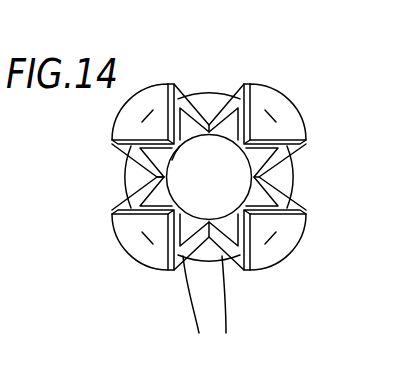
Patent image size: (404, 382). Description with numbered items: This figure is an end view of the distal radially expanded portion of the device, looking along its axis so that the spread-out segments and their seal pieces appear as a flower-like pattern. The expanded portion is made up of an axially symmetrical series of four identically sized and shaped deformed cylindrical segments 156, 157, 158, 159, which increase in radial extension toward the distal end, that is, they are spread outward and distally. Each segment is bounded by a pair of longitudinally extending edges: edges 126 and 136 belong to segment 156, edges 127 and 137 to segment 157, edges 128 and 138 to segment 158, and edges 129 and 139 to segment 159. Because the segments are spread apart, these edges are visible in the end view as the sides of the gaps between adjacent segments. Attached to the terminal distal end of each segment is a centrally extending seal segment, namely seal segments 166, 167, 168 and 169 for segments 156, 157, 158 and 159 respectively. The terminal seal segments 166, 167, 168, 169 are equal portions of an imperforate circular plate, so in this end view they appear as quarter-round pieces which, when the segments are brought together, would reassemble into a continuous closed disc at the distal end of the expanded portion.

The longitudinally extending edge 126 is at (270, 160).
The longitudinally extending edge 127 is at (227, 322).
The longitudinally extending edge 128 is at (195, 106).
The longitudinally extending edge 129 is at (142, 210).
The longitudinally extending edge 136 is at (245, 103).
The longitudinally extending edge 137 is at (272, 204).
The longitudinally extending edge 138 is at (140, 145).
The longitudinally extending edge 139 is at (198, 322).
The deformed cylindrical segment 156 is at (250, 166).
The deformed cylindrical segment 157 is at (282, 210).
The deformed cylindrical segment 158 is at (172, 160).
The deformed cylindrical segment 159 is at (152, 198).
The terminal seal segment 166 is at (283, 115).
The terminal seal segment 167 is at (281, 237).
The terminal seal segment 168 is at (153, 102).
The terminal seal segment 169 is at (146, 248).